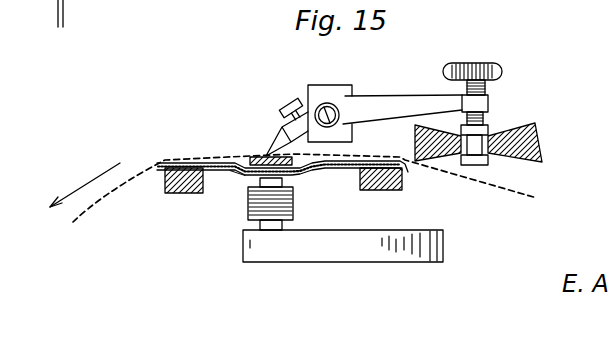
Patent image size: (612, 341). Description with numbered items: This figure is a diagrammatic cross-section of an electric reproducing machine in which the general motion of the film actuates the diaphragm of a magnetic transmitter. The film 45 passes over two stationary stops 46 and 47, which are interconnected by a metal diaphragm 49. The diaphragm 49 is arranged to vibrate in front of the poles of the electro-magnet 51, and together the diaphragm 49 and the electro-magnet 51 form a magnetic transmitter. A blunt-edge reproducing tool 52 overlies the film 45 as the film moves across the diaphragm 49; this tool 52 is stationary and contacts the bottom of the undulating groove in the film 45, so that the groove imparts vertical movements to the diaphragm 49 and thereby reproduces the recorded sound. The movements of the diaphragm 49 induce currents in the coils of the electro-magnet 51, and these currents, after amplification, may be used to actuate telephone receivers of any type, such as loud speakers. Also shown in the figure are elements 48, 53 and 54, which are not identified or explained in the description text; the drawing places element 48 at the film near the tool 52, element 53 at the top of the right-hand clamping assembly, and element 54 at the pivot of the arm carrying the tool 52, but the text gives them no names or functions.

The film 45 is at (98, 203).
The stationary stop 46 is at (183, 193).
The stationary stop 47 is at (404, 177).
The pad 48 is at (248, 156).
The metal diaphragm 49 is at (237, 171).
The electro-magnet 51 is at (345, 250).
The blunt-edge reproducing tool 52 is at (270, 150).
The adjusting knob screw 53 is at (505, 73).
The pivot arm 54 is at (337, 106).